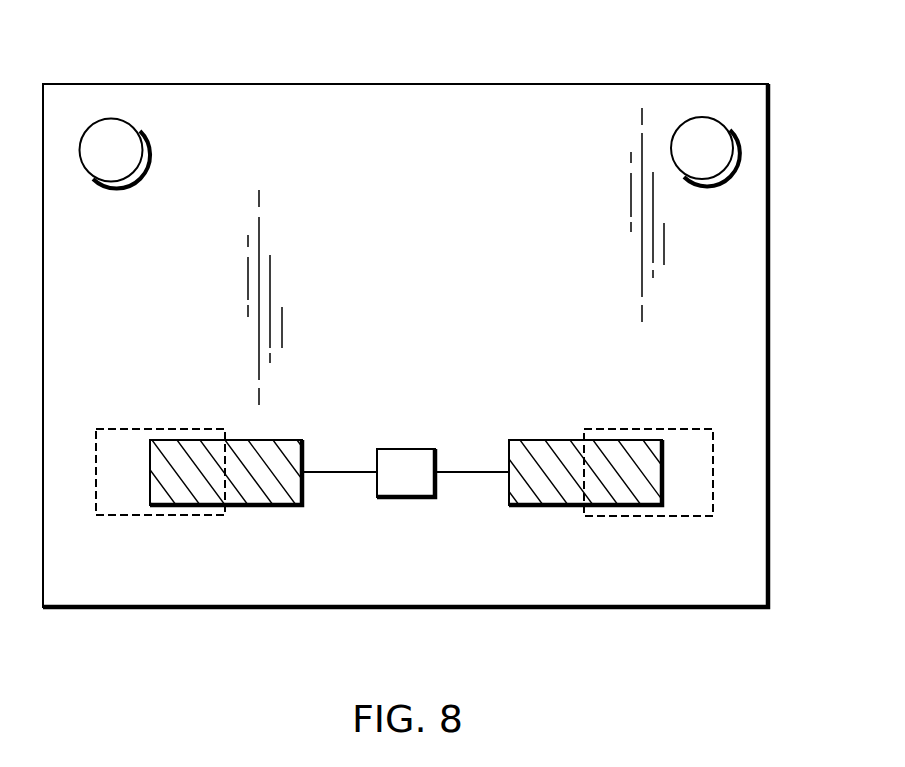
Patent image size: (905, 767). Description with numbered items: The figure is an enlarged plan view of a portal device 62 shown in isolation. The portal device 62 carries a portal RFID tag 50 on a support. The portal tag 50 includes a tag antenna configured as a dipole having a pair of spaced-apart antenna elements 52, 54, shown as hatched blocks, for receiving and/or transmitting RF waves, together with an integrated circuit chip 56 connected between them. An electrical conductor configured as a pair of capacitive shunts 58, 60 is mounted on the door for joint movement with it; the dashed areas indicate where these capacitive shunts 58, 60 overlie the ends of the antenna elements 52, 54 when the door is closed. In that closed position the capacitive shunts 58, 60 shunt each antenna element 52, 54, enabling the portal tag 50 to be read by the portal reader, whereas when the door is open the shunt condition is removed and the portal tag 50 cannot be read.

The portal RFID tag 50 is at (240, 440).
The antenna element 52 is at (262, 493).
The antenna element 54 is at (553, 493).
The integrated circuit chip 56 is at (402, 485).
The capacitive shunt 58 is at (120, 505).
The capacitive shunt 60 is at (688, 505).
The portal device 62 is at (762, 53).